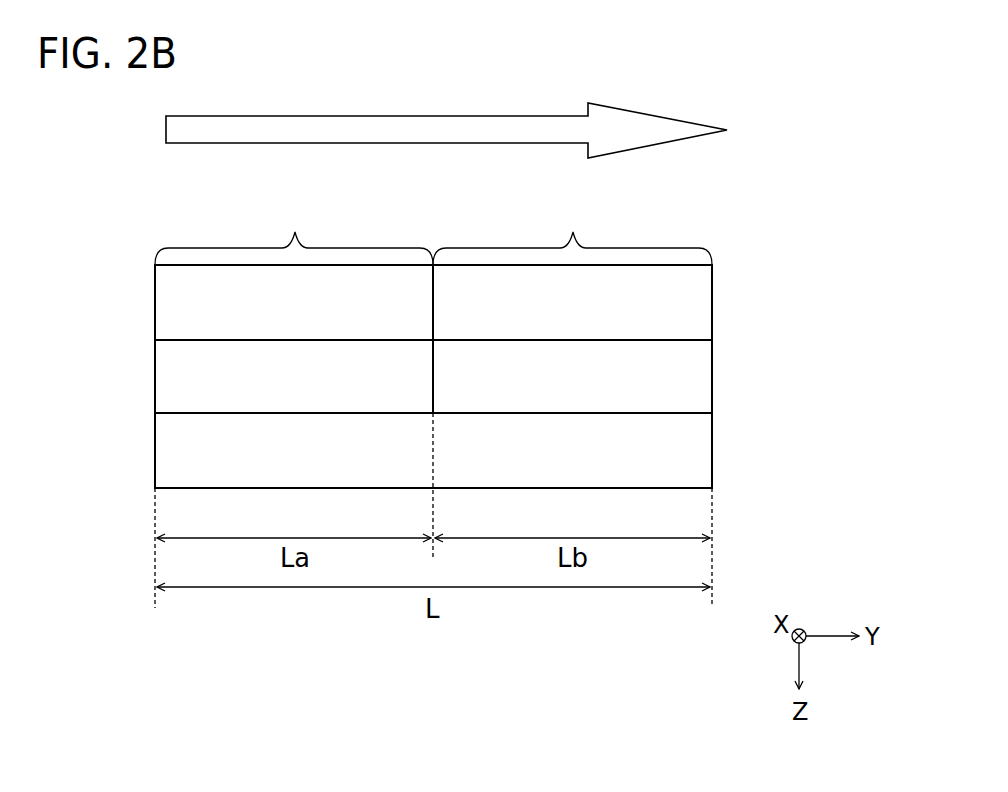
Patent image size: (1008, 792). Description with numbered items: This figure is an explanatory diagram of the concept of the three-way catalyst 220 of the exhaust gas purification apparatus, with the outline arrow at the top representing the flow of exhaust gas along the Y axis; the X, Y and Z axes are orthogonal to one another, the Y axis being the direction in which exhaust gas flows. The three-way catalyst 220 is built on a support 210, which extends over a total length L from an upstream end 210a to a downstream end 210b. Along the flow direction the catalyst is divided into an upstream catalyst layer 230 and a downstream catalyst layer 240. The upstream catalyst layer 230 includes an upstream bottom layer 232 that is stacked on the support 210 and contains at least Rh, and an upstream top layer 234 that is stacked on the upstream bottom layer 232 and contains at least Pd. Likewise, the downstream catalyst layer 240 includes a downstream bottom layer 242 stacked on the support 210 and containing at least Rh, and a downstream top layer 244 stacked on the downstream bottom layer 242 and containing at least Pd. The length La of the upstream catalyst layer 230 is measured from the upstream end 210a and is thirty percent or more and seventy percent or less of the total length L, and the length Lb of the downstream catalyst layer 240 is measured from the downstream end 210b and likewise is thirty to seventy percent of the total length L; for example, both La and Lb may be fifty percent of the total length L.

The support 210 is at (713, 448).
The upstream end 210a is at (155, 568).
The downstream end 210b is at (711, 568).
The three-way catalyst 220 is at (788, 273).
The upstream catalyst layer 230 is at (295, 232).
The downstream catalyst layer 240 is at (573, 232).
The upstream bottom layer 232 is at (406, 390).
The upstream top layer 234 is at (406, 317).
The downstream bottom layer 242 is at (684, 390).
The downstream top layer 244 is at (684, 317).